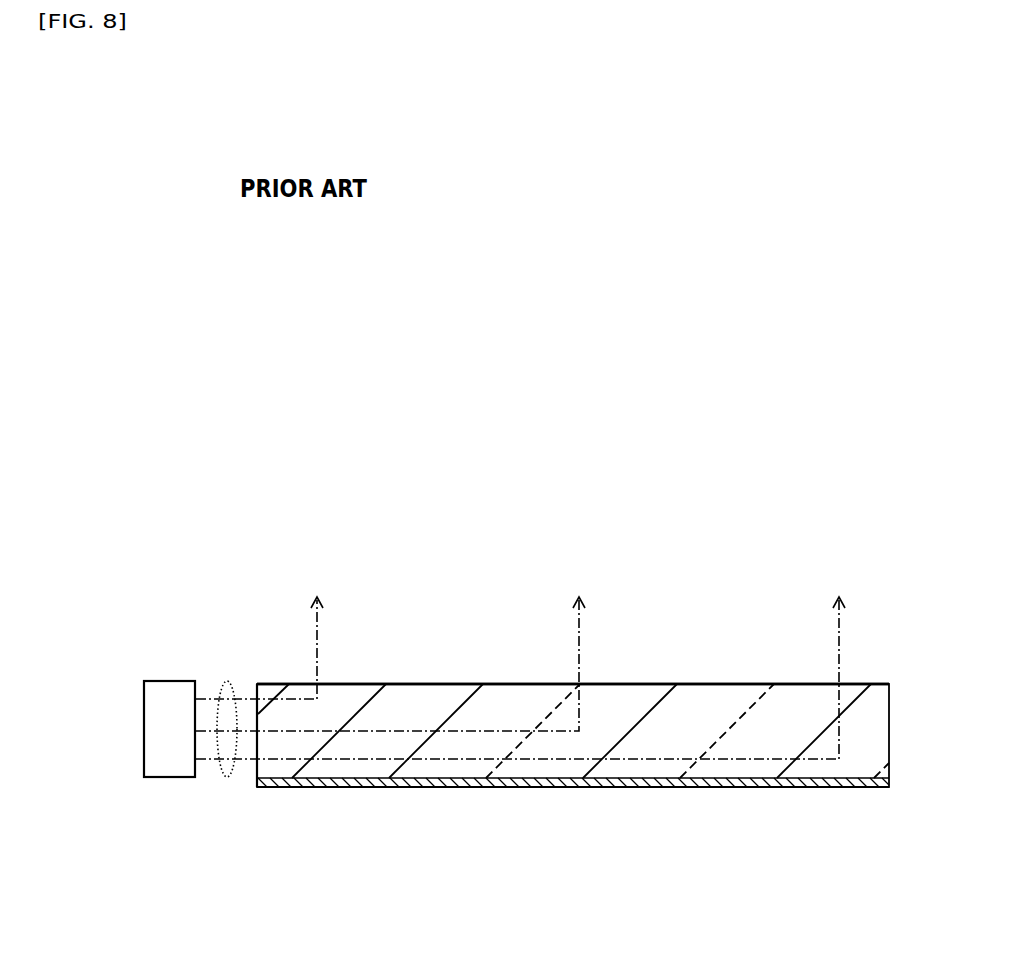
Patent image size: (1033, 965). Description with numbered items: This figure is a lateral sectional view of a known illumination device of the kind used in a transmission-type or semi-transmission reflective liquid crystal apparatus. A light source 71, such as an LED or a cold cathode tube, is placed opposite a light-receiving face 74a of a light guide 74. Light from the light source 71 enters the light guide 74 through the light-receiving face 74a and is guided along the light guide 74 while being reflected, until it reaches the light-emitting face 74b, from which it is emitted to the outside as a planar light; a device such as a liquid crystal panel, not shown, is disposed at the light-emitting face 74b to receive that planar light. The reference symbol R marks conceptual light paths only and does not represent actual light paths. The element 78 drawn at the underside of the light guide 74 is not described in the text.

The light source 71 is at (165, 768).
The conceptual light paths R is at (225, 777).
The light guide 74 is at (642, 738).
The light-receiving face 74a is at (257, 685).
The light-emitting face 74b is at (697, 683).
The reflecting sheet 78 is at (473, 779).